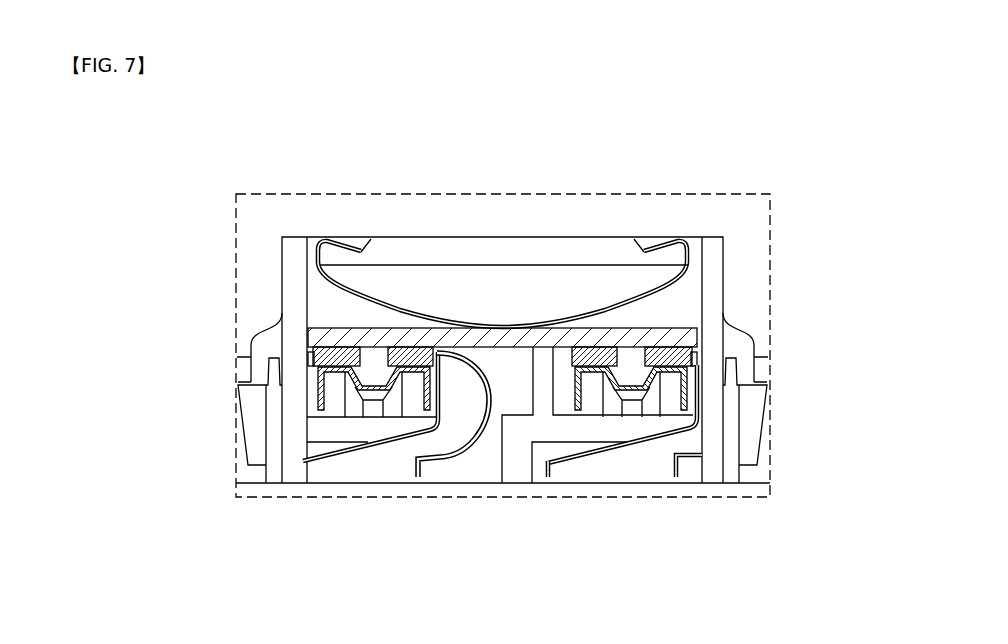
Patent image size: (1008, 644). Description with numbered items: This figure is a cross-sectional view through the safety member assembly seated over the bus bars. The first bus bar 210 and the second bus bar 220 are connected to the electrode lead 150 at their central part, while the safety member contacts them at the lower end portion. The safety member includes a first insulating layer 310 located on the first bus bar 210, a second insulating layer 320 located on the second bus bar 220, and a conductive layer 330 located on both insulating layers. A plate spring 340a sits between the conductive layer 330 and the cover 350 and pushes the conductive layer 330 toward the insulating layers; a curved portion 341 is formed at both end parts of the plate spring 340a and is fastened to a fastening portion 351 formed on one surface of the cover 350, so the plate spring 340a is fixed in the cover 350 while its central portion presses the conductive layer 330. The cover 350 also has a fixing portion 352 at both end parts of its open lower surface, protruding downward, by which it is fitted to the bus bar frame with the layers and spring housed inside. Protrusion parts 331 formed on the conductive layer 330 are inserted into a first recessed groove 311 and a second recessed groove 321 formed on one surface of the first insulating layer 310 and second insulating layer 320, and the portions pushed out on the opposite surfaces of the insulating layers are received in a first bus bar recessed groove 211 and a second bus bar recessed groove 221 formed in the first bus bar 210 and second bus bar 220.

The electrode lead 150 is at (447, 455).
The first bus bar 210 is at (697, 370).
The first bus bar recessed groove 211 is at (612, 385).
The second bus bar 220 is at (306, 416).
The second bus bar recessed groove 221 is at (360, 382).
The first insulating layer 310 is at (696, 354).
The first recessed groove 311 is at (690, 372).
The second insulating layer 320 is at (307, 354).
The second recessed groove 321 is at (318, 370).
The conductive layer 330 is at (700, 333).
The protrusion part 331 is at (365, 348).
The plate spring 340a is at (705, 288).
The curved portion 341 is at (327, 241).
The cover 350 is at (712, 245).
The fastening portion 351 is at (345, 257).
The fixing portion 352 is at (250, 428).